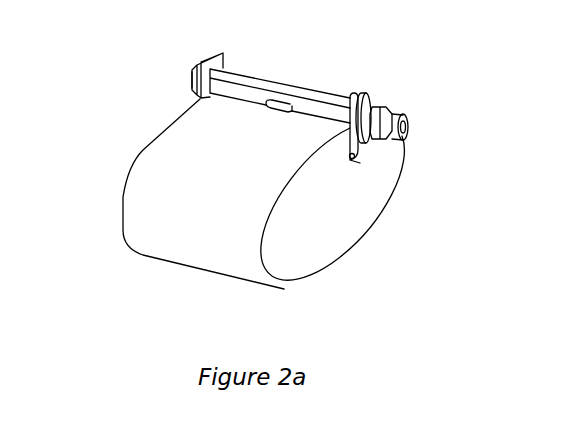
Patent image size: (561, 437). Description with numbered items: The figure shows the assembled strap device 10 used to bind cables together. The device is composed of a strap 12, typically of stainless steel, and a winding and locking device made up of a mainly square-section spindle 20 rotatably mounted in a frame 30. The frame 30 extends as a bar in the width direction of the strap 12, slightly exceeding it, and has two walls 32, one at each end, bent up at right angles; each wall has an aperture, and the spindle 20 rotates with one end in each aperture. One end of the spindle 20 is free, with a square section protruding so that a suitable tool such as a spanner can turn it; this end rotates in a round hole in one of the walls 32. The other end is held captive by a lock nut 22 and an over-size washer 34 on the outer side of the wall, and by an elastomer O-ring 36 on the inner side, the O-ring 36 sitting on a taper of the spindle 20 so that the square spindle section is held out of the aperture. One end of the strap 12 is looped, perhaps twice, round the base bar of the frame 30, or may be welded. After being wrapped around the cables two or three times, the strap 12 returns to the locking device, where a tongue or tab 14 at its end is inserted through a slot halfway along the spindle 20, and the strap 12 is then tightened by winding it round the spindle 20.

The strap device 10 is at (142, 287).
The strap 12 is at (338, 253).
The tongue or tab 14 is at (282, 108).
The spindle 20 is at (189, 82).
The lock nut 22 is at (409, 117).
The frame 30 is at (358, 163).
The walls 32 is at (215, 50).
The over-size washer 34 is at (388, 100).
The elastomer O-ring 36 is at (350, 127).